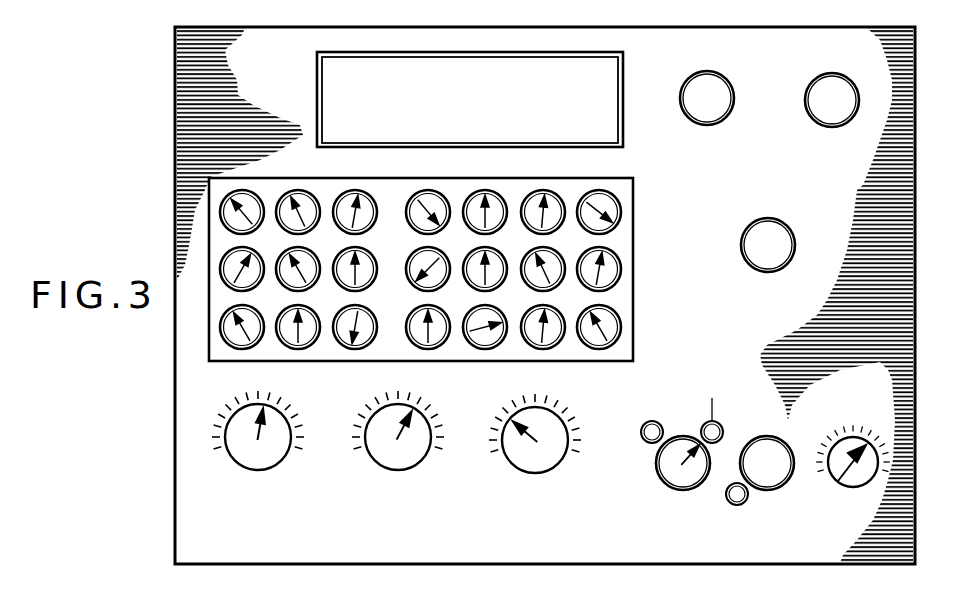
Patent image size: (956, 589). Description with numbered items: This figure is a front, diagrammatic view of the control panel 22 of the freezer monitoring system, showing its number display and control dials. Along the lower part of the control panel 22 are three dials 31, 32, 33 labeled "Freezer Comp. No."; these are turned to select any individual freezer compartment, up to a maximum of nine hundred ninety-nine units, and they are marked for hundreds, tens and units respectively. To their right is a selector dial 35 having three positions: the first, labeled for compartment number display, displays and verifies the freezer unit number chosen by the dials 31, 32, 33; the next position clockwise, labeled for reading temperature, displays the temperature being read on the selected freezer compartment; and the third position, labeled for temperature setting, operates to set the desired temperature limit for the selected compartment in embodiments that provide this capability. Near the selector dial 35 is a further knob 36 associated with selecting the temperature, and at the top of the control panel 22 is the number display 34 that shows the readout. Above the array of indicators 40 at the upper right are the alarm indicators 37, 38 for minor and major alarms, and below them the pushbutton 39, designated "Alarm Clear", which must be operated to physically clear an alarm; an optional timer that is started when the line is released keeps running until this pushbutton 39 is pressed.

The control panel 22 is at (135, 413).
The dial 31 is at (240, 464).
The dial 32 is at (370, 462).
The dial 33 is at (567, 461).
The digital display 34 is at (316, 92).
The selector dial 35 is at (663, 479).
The select temperature knob 36 is at (852, 433).
The minor alarm indicator 37 is at (697, 80).
The major alarm indicator 38 is at (843, 83).
The pushbutton 39 is at (787, 244).
The alarm number indicator array 40 is at (627, 247).